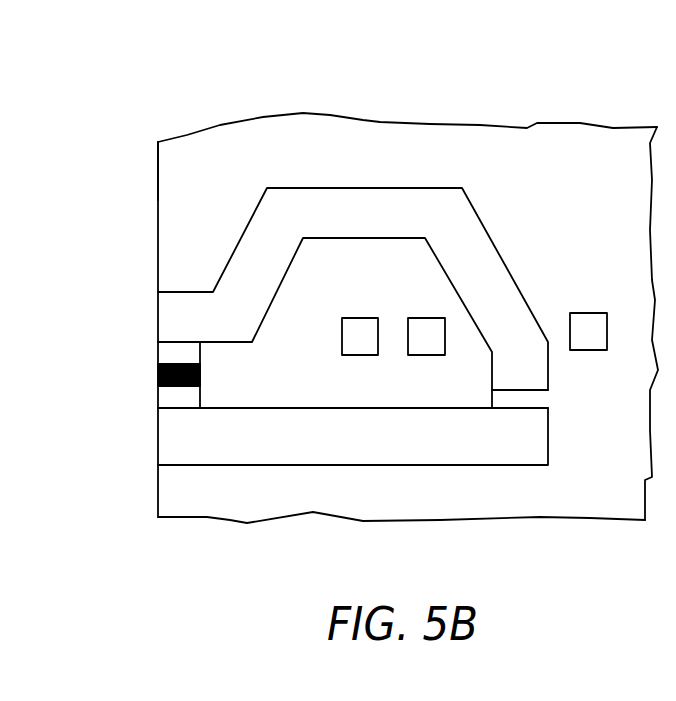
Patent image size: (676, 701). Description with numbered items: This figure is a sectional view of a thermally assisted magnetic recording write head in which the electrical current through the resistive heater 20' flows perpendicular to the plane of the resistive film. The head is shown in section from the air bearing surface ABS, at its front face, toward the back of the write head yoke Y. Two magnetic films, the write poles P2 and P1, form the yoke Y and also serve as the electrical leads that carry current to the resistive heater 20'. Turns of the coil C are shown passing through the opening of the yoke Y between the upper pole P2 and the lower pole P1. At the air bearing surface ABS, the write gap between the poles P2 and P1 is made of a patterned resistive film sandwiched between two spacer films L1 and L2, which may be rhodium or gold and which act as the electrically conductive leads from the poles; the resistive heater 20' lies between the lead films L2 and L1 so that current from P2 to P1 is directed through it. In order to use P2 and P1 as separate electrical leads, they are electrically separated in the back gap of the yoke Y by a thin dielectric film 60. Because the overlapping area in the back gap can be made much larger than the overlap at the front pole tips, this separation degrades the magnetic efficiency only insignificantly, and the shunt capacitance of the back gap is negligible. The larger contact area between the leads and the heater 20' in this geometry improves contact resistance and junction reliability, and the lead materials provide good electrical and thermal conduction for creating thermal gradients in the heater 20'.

The air bearing surface ABS is at (158, 166).
The write pole P2 is at (168, 315).
The write head yoke Y is at (328, 217).
The coil C is at (587, 327).
The spacer film L2 is at (173, 357).
The resistive heater 20' is at (126, 390).
The spacer film L1 is at (185, 397).
The write pole P1 is at (173, 445).
The thin dielectric film 60 is at (548, 398).